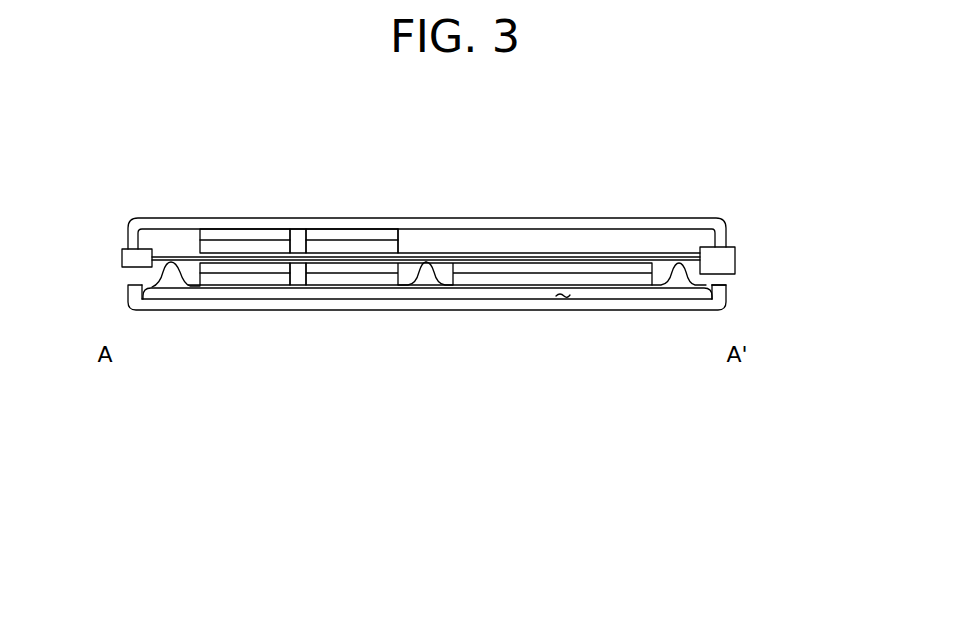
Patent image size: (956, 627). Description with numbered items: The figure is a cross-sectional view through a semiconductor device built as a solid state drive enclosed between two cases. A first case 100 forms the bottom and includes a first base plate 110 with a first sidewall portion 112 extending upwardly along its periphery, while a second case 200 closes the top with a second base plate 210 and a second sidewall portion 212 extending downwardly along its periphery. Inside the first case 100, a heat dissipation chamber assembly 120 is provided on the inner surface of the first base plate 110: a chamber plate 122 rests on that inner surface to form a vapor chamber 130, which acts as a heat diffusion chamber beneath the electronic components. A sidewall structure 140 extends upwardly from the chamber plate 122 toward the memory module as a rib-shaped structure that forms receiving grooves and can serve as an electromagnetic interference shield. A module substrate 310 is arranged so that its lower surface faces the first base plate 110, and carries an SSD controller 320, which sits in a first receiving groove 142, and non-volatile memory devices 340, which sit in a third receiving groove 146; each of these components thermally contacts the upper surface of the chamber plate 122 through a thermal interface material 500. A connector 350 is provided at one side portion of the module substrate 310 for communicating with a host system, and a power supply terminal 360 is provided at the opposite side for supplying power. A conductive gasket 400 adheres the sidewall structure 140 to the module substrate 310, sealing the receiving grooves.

The first case 100 is at (740, 313).
The first base plate 110 is at (606, 304).
The first sidewall portion 112 is at (728, 289).
The heat dissipation chamber assembly 120 is at (650, 298).
The chamber plate 122 is at (507, 290).
The vapor chamber 130 is at (561, 298).
The sidewall structure 140 is at (674, 263).
The first receiving groove 142 is at (451, 287).
The third receiving groove 146 is at (402, 287).
The second case 200 is at (738, 211).
The second base plate 210 is at (440, 220).
The second sidewall portion 212 is at (128, 236).
The module substrate 310 is at (178, 266).
The SSD controller 320 is at (552, 262).
The non-volatile memory devices 340 is at (265, 245).
The connector 350 is at (736, 259).
The power supply terminal 360 is at (122, 256).
The conductive gasket 400 is at (170, 260).
The thermal interface material 500 is at (357, 235).